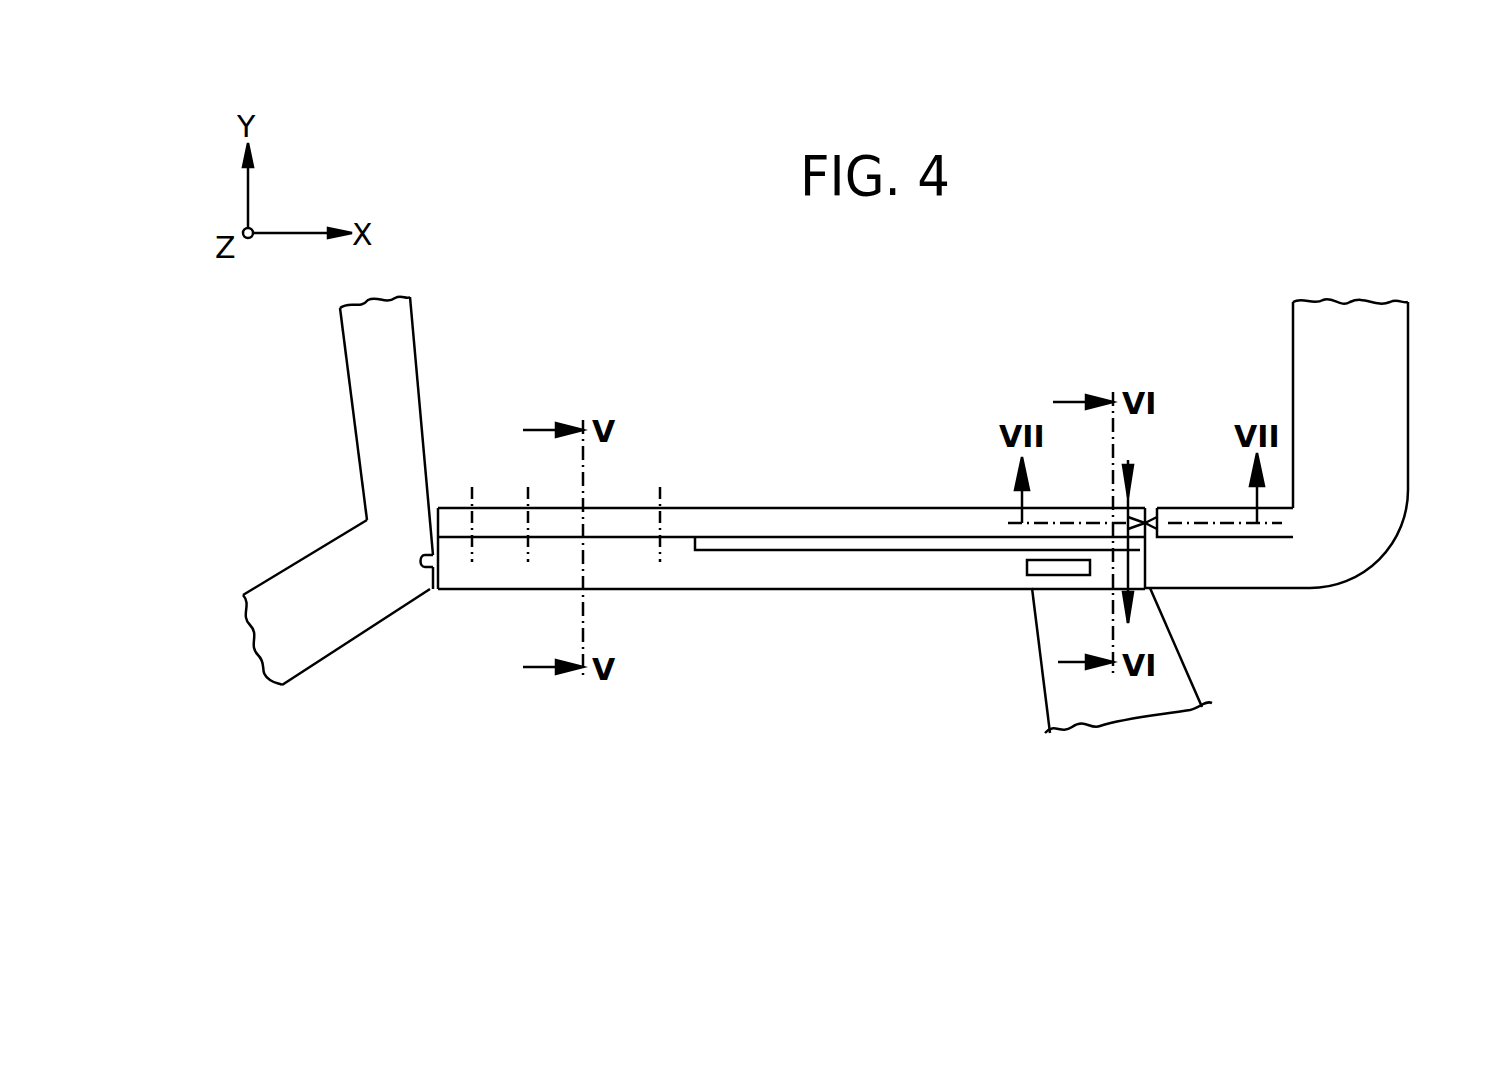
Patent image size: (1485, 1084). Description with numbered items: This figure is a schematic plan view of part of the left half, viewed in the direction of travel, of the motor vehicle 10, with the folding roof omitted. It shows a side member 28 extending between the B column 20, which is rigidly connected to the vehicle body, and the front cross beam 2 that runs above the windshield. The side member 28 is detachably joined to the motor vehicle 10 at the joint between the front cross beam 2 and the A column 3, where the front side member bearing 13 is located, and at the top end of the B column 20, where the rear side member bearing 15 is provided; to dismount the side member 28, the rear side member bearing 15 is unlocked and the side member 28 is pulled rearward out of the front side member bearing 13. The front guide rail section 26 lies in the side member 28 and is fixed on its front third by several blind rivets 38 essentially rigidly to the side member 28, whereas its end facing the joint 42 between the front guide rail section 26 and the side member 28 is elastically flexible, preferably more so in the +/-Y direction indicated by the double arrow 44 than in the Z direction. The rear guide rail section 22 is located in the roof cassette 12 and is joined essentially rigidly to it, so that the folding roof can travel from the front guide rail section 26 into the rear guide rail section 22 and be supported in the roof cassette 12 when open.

The motor vehicle 10 is at (305, 434).
The front cross beam 2 is at (392, 367).
The A column 3 is at (313, 612).
The front side member bearing 13 is at (423, 569).
The blind rivets 38 is at (528, 505).
The front guide rail section 26 is at (797, 518).
The side member 28 is at (830, 589).
The rear side member bearing 15 is at (1057, 579).
The double arrow 44 is at (1133, 500).
The rear guide rail section 22 is at (1213, 510).
The joint 42 is at (1152, 584).
The roof cassette 12 is at (1372, 375).
The B column 20 is at (1135, 697).